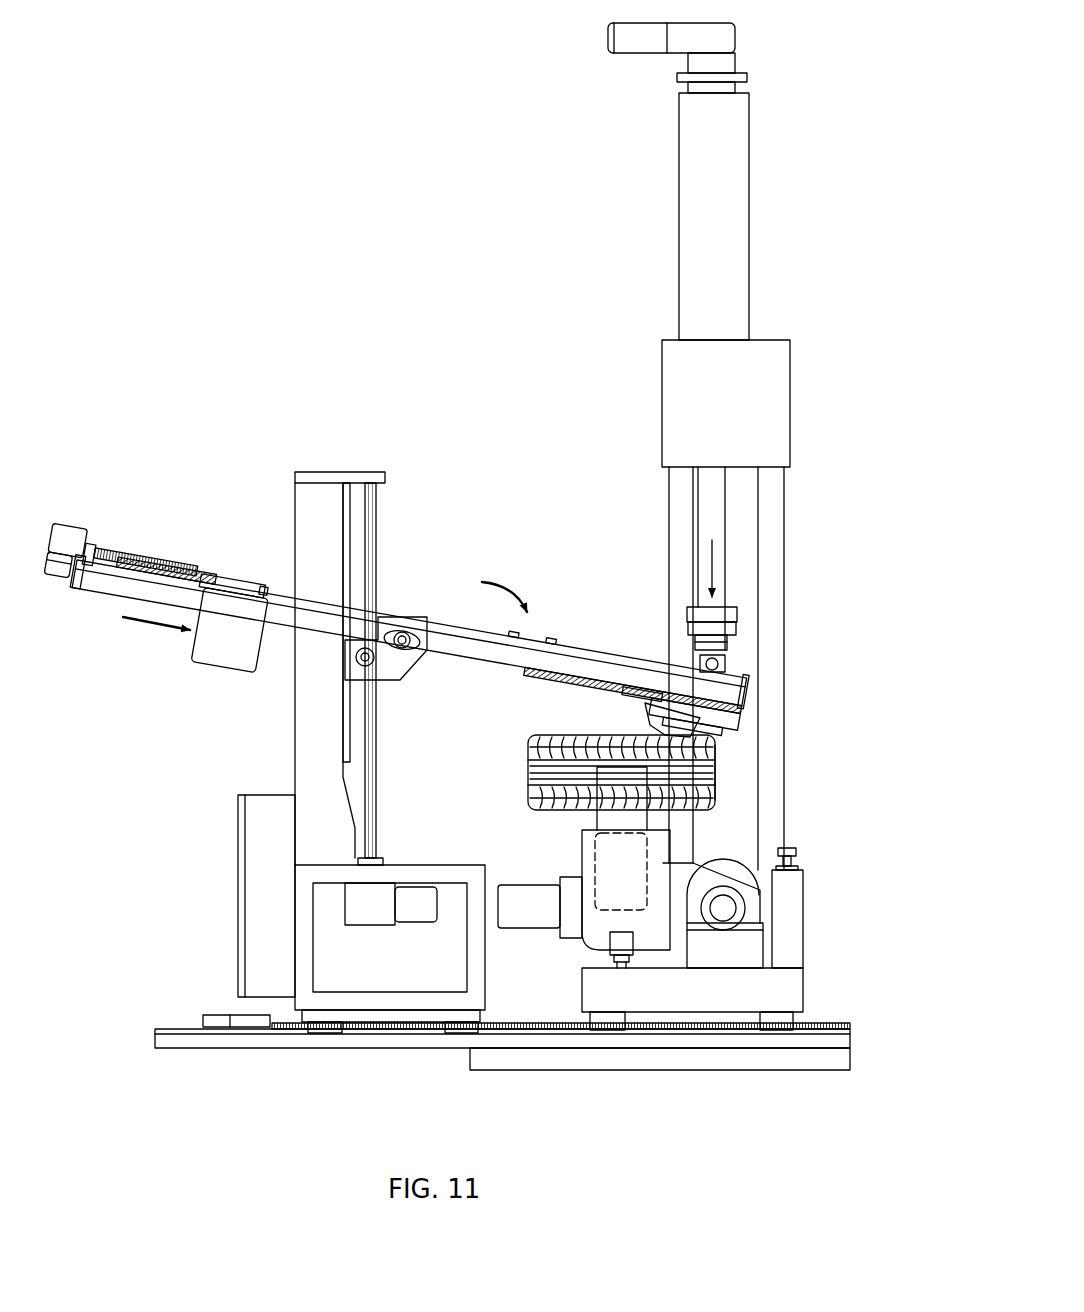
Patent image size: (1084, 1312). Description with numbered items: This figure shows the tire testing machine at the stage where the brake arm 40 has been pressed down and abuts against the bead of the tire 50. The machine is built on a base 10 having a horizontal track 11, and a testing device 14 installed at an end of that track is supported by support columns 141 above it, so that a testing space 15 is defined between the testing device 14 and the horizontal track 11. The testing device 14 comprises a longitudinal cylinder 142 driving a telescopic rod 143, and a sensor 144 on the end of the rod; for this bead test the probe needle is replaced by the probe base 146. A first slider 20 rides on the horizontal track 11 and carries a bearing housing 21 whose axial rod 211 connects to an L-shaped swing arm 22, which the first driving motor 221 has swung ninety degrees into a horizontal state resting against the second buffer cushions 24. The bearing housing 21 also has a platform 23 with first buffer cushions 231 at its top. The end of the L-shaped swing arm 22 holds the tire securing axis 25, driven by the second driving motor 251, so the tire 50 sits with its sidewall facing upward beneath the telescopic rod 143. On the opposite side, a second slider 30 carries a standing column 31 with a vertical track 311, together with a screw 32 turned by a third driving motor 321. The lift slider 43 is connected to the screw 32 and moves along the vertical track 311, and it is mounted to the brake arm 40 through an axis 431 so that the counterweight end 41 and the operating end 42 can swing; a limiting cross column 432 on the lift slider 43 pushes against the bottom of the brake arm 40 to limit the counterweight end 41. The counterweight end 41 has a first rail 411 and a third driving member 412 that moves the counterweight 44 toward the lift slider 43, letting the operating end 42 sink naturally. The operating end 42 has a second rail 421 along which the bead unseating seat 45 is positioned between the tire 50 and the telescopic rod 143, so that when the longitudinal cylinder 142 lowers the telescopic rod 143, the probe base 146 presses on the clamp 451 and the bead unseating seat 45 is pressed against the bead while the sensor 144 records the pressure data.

The base 10 is at (812, 1076).
The horizontal track 11 is at (842, 1043).
The testing device 14 is at (768, 403).
The support columns 141 is at (774, 549).
The longitudinal cylinder 142 is at (741, 232).
The telescopic rod 143 is at (706, 497).
The sensor 144 is at (730, 614).
The probe base 146 is at (727, 642).
The testing space 15 is at (733, 802).
The first slider 20 is at (812, 992).
The bearing housing 21 is at (750, 935).
The axial rod 211 is at (723, 908).
The L-shaped swing arm 22 is at (585, 843).
The first driving motor 221 is at (545, 918).
The platform 23 is at (790, 931).
The first buffer cushions 231 is at (795, 862).
The second buffer cushions 24 is at (622, 956).
The tire securing axis 25 is at (603, 775).
The second driving motor 251 is at (628, 848).
The second slider 30 is at (430, 858).
The standing column 31 is at (305, 748).
The vertical track 311 is at (345, 707).
The screw 32 is at (375, 725).
The third driving motor 321 is at (360, 897).
The brake arm 40 is at (530, 618).
The counterweight end 41 is at (93, 580).
The first rail 411 is at (160, 565).
The third driving member 412 is at (130, 560).
The operating end 42 is at (733, 695).
The second rail 421 is at (565, 668).
The lift slider 43 is at (390, 673).
The axis 431 is at (402, 635).
The limiting cross column 432 is at (358, 658).
The counterweight 44 is at (247, 580).
The bead unseating seat 45 is at (703, 729).
The clamp 451 is at (733, 663).
The tire 50 is at (680, 780).